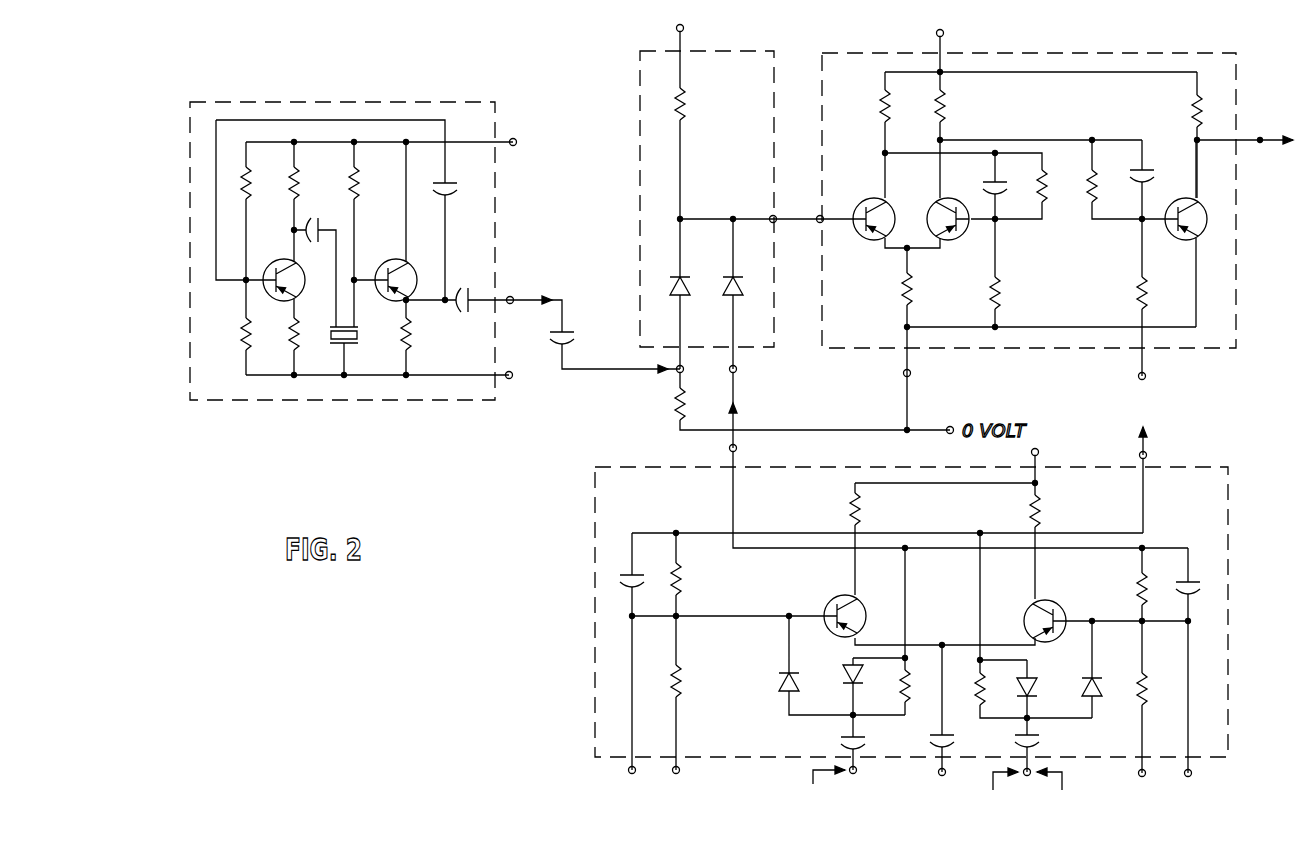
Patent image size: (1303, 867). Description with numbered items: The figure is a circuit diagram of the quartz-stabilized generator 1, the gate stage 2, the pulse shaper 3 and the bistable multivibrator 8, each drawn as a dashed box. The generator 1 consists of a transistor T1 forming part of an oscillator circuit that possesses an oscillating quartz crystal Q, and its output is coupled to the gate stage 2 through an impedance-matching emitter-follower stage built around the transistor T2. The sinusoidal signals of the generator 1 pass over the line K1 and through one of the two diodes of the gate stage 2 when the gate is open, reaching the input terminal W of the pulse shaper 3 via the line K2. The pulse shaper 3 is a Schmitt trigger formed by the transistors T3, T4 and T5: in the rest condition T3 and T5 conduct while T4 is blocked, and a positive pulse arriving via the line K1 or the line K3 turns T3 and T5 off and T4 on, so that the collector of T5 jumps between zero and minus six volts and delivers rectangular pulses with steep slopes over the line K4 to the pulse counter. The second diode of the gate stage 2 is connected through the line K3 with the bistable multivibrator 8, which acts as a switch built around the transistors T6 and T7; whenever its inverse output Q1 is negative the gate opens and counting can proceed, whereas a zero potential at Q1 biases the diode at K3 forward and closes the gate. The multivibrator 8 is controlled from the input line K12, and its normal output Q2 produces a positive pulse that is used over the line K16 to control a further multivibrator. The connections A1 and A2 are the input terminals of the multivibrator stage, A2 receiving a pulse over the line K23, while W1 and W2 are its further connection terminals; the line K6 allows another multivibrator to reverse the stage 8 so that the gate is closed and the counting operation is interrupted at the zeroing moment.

The quartz-stabilized generator 1 is at (338, 100).
The gate stage 2 is at (770, 58).
The pulse shaper 3 is at (846, 58).
The bistable multivibrator 8 is at (1204, 478).
The transistor T1 is at (298, 298).
The transistor T2 is at (408, 270).
The transistor T3 is at (890, 204).
The transistor T4 is at (925, 234).
The transistor T5 is at (1202, 210).
The transistor T6 is at (870, 606).
The transistor T7 is at (1024, 616).
The oscillating quartz crystal Q is at (352, 343).
The inverse output Q1 is at (959, 497).
The normal output Q2 is at (1123, 487).
The line K1 is at (595, 323).
The line K2 is at (786, 220).
The line K3 is at (745, 407).
The line K4 is at (1245, 130).
The line K6 is at (1005, 783).
The input line K12 is at (808, 780).
The line K16 is at (1160, 477).
The line K23 is at (1064, 783).
The input terminal W is at (818, 224).
The input terminal W1 is at (617, 774).
The connection terminal W2 is at (1203, 784).
The input terminal A1 is at (870, 754).
The input terminal A2 is at (1046, 756).